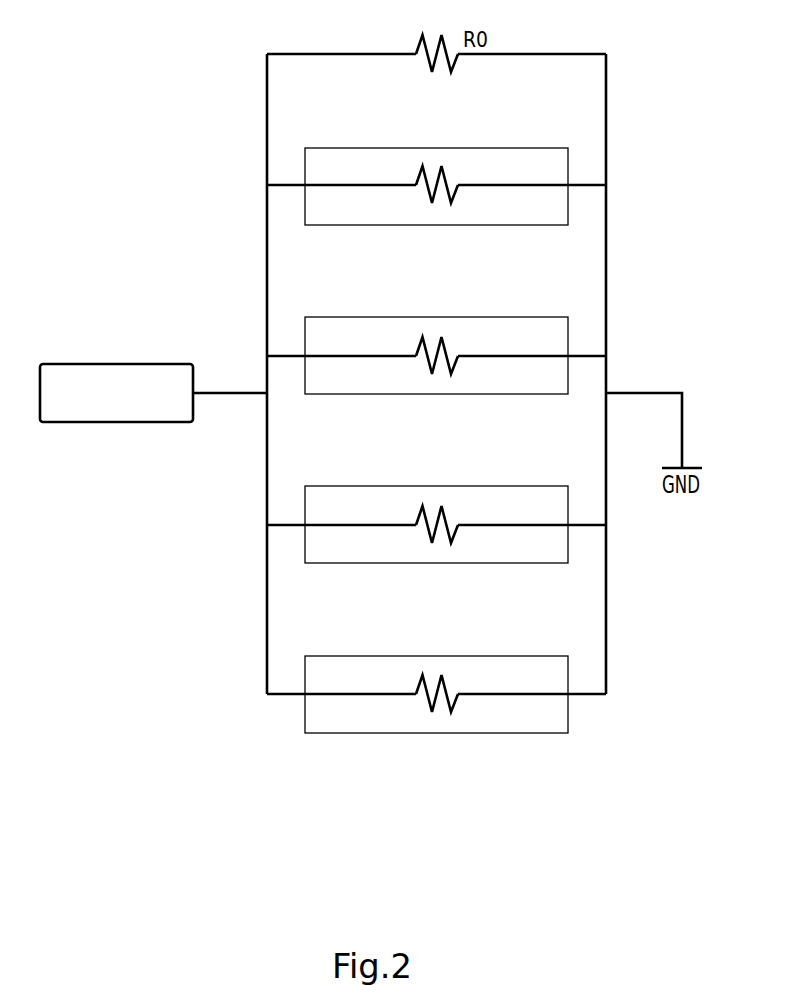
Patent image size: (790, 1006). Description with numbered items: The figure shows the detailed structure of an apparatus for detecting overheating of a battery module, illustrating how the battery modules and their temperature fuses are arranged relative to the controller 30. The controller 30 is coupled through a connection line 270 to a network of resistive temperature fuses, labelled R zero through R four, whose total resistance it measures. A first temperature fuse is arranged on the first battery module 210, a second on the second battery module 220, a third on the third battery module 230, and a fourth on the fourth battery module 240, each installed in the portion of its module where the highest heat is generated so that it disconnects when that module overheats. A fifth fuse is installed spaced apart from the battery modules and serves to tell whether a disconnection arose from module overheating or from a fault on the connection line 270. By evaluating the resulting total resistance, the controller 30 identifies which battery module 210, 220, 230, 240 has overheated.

The controller 30 is at (116, 363).
The connection line 270 is at (229, 392).
The first battery module 210 is at (548, 147).
The second battery module 220 is at (548, 316).
The third battery module 230 is at (548, 485).
The fourth battery module 240 is at (548, 655).